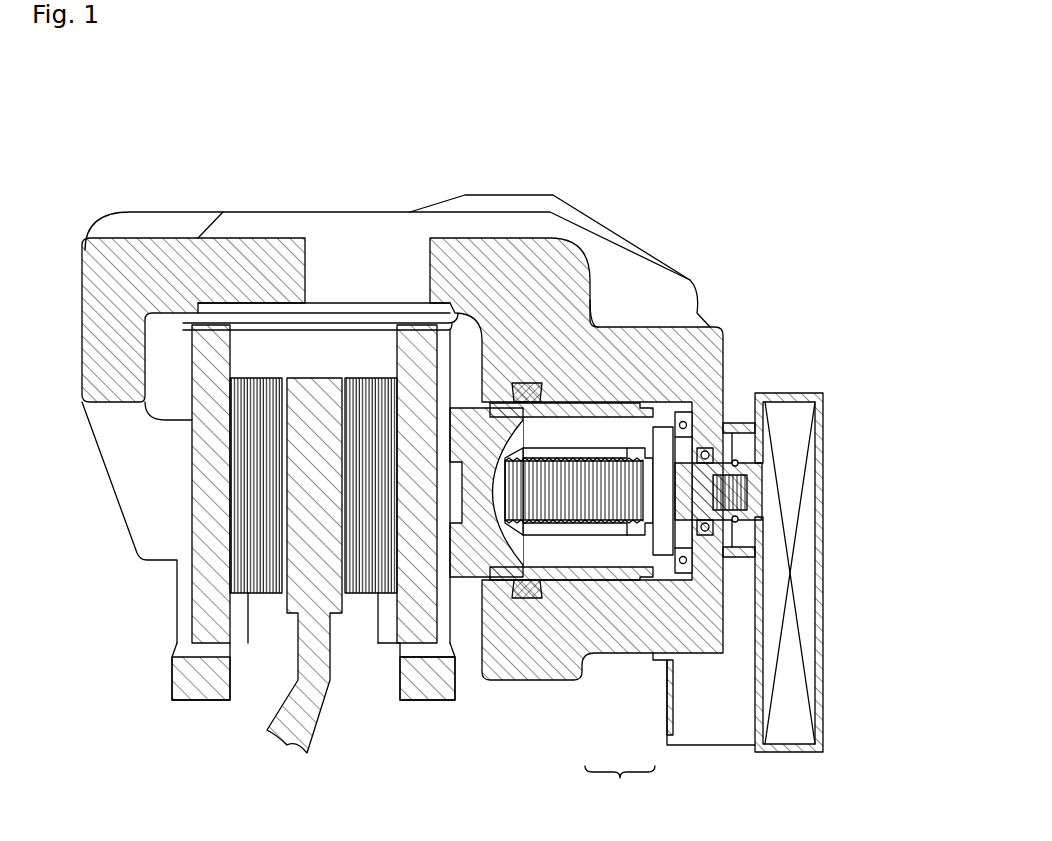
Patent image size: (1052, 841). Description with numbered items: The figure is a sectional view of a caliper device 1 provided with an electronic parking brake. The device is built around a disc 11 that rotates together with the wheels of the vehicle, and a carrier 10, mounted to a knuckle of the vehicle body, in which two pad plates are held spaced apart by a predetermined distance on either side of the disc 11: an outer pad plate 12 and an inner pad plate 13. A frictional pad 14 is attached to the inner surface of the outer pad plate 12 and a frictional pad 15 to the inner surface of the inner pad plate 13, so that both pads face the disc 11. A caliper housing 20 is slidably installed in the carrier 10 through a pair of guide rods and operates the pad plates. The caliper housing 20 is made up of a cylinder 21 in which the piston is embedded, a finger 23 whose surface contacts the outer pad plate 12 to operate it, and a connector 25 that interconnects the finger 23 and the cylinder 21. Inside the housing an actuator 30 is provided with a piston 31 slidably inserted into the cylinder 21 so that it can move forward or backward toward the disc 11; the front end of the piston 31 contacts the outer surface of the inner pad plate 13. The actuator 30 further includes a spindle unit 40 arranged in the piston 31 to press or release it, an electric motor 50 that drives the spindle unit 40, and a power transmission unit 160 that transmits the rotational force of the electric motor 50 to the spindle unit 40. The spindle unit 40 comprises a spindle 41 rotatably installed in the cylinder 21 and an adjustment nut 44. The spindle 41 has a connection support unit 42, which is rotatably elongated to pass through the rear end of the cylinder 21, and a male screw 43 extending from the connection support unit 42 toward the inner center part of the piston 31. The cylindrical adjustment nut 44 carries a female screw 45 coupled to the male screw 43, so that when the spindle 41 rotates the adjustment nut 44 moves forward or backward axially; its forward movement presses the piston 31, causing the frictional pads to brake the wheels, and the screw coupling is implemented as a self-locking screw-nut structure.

The caliper device 1 is at (449, 83).
The carrier 10 is at (200, 700).
The disc 11 is at (335, 600).
The outer pad plate 12 is at (195, 600).
The inner pad plate 13 is at (420, 625).
The frictional pad 14 is at (268, 598).
The frictional pad 15 is at (370, 598).
The caliper housing 20 is at (490, 193).
The cylinder 21 is at (617, 305).
The finger 23 is at (120, 500).
The connector 25 is at (245, 250).
The actuator 30 is at (622, 352).
The piston 31 is at (625, 408).
The spindle unit 40 is at (530, 697).
The spindle 41 is at (620, 787).
The connection support unit 42 is at (662, 480).
The male screw 43 is at (590, 530).
The adjustment nut 44 is at (505, 510).
The female screw 45 is at (470, 520).
The electric motor 50 is at (708, 735).
The power transmission unit 160 is at (808, 525).